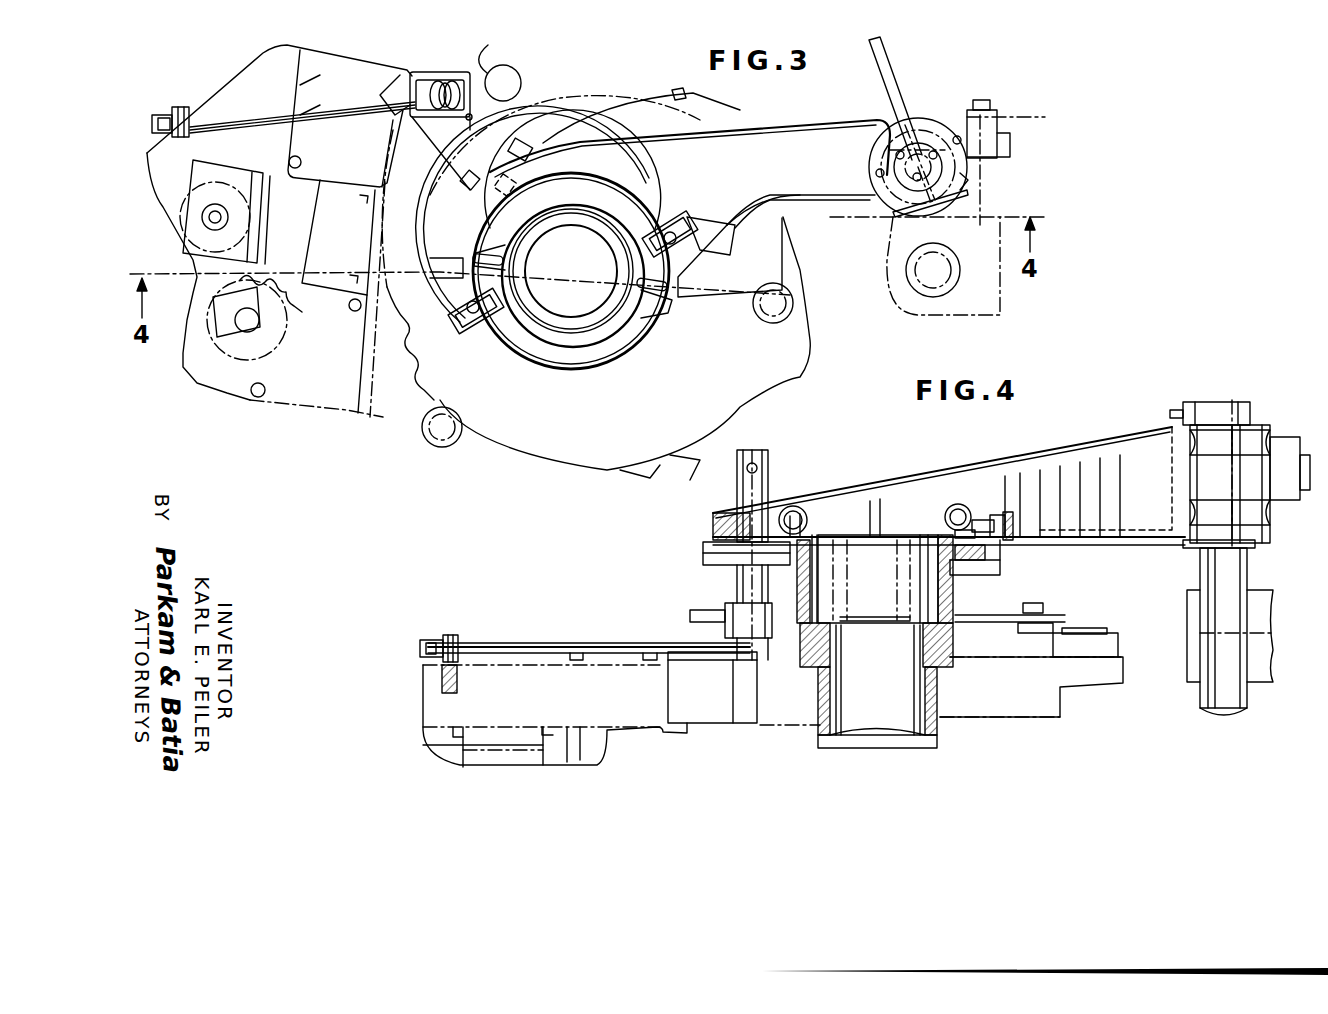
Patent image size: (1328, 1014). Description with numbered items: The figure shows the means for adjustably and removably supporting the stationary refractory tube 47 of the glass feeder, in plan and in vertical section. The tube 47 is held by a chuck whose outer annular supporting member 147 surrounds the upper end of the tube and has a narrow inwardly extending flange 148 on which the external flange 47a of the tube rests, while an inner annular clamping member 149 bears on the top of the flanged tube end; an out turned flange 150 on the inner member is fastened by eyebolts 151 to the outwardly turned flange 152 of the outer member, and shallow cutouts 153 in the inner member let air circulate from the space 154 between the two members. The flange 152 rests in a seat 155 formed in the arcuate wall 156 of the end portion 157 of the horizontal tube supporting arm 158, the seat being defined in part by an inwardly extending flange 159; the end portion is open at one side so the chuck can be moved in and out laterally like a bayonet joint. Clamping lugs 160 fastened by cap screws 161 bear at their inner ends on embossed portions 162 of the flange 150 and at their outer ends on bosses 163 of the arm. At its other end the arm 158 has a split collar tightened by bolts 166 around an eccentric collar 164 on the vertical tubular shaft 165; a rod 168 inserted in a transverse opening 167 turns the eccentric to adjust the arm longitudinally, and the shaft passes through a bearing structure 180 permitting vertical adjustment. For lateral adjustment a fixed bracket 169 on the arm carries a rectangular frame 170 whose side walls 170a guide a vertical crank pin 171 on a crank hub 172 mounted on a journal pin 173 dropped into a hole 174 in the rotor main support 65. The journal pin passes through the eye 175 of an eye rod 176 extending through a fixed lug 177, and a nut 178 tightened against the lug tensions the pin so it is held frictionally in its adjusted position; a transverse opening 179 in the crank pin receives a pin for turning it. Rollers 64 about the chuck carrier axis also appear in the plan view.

In FIG. 4, the tube 47 is at (937, 694).
In FIG. 4, the external flange 47a is at (800, 657).
In FIG. 3, the rollers 64 is at (512, 74).
In FIG. 3, the rotor main support 65 is at (375, 412).
In FIG. 4, the rotor main support 65 is at (637, 720).
In FIG. 4, the outer annular supporting member 147 is at (950, 582).
In FIG. 4, the inwardly extending narrow flange 148 is at (952, 644).
In FIG. 4, the inner annular clamping member 149 is at (930, 580).
In FIG. 4, the out turned flange 150 is at (945, 525).
In FIG. 4, the eyebolts 151 is at (970, 530).
In FIG. 4, the outwardly turned flange 152 is at (985, 550).
In FIG. 4, the shallow cutouts 153 is at (905, 620).
In FIG. 4, the space 154 is at (800, 600).
In FIG. 4, the seat 155 is at (985, 570).
In FIG. 4, the arcuate wall 156 is at (1030, 546).
In FIG. 3, the end portion 157 is at (575, 165).
In FIG. 4, the end portion 157 is at (832, 510).
In FIG. 3, the tube supporting arm 158 is at (777, 135).
In FIG. 4, the tube supporting arm 158 is at (1072, 478).
In FIG. 4, the inwardly extending flange 159 is at (737, 575).
In FIG. 3, the clamping lugs 160 is at (455, 312).
In FIG. 4, the clamping lugs 160 is at (995, 520).
In FIG. 3, the cap screws 161 is at (462, 320).
In FIG. 4, the cap screws 161 is at (985, 522).
In FIG. 3, the embossed portions 162 is at (500, 318).
In FIG. 4, the embossed portions 162 is at (958, 505).
In FIG. 3, the bosses 163 is at (708, 240).
In FIG. 4, the bosses 163 is at (1040, 520).
In FIG. 3, the eccentric collar 164 is at (935, 125).
In FIG. 4, the eccentric collar 164 is at (1240, 415).
In FIG. 3, the vertical tubular shaft 165 is at (965, 178).
In FIG. 4, the vertical tubular shaft 165 is at (1240, 568).
In FIG. 3, the tightening bolts 166 is at (962, 196).
In FIG. 4, the tightening bolts 166 is at (1260, 440).
In FIG. 3, the transverse opening 167 is at (920, 135).
In FIG. 3, the rod 168 is at (882, 62).
In FIG. 4, the rod 168 is at (1170, 412).
In FIG. 3, the fixed bracket 169 is at (505, 140).
In FIG. 3, the rectangular frame 170 is at (428, 75).
In FIG. 3, the side walls 170a is at (445, 80).
In FIG. 3, the crank pin 171 is at (485, 70).
In FIG. 4, the crank pin 171 is at (765, 470).
In FIG. 4, the crank hub 172 is at (725, 612).
In FIG. 4, the journal pin 173 is at (745, 706).
In FIG. 4, the vertical hole 174 is at (748, 708).
In FIG. 4, the eye 175 is at (738, 650).
In FIG. 3, the eye rod 176 is at (325, 105).
In FIG. 4, the eye rod 176 is at (610, 643).
In FIG. 3, the fixed lug 177 is at (180, 107).
In FIG. 4, the fixed lug 177 is at (452, 635).
In FIG. 3, the nut 178 is at (165, 115).
In FIG. 4, the nut 178 is at (430, 640).
In FIG. 3, the transverse opening 179 is at (470, 117).
In FIG. 4, the transverse opening 179 is at (746, 470).
In FIG. 4, the bearing structure 180 is at (1262, 672).